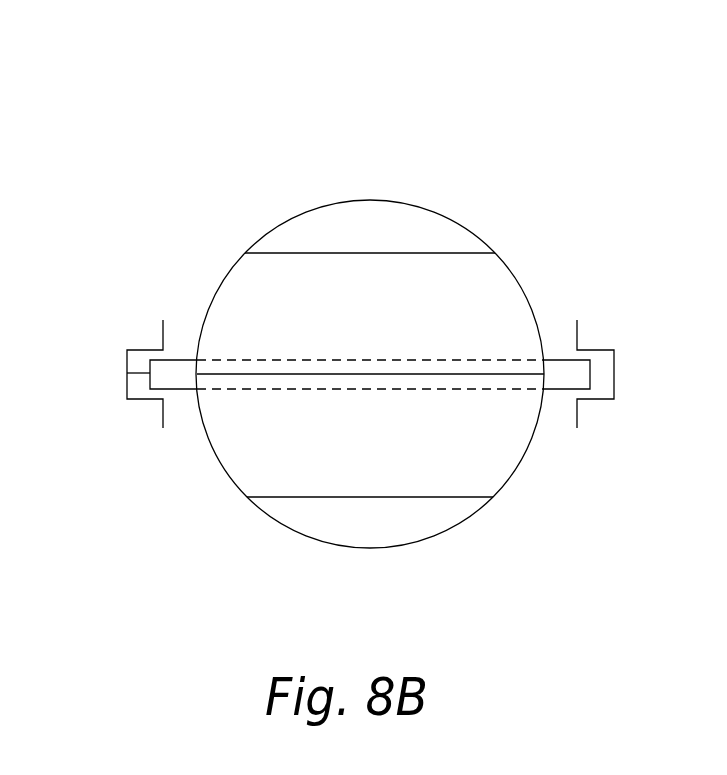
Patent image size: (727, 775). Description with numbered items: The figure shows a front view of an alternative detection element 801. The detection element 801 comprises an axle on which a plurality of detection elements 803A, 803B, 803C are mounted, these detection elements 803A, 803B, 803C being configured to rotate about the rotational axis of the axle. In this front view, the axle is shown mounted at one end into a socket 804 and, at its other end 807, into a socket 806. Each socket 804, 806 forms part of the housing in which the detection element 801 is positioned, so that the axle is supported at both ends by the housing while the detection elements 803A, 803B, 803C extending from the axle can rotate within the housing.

The detection element 801 is at (505, 120).
The detection element 803A is at (370, 253).
The detection element 803B is at (495, 373).
The detection element 803C is at (368, 498).
The socket 804 is at (587, 350).
The socket 806 is at (132, 373).
The end 807 is at (197, 374).